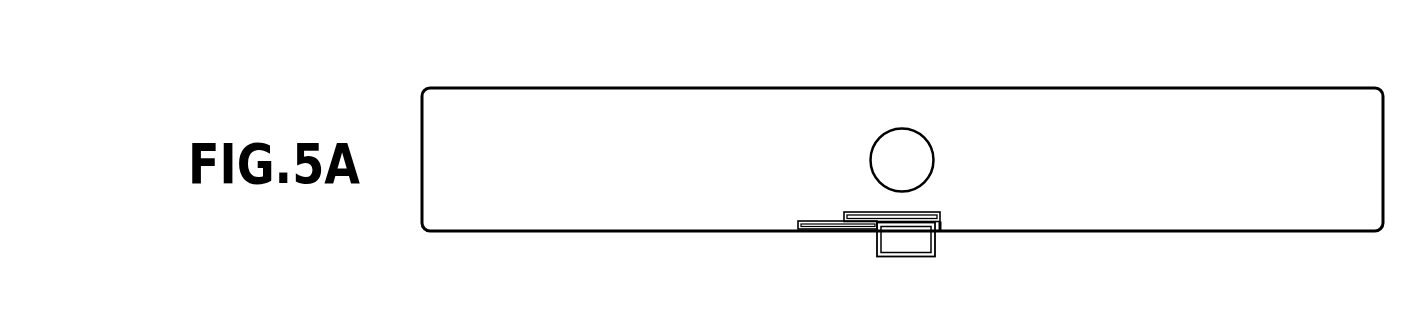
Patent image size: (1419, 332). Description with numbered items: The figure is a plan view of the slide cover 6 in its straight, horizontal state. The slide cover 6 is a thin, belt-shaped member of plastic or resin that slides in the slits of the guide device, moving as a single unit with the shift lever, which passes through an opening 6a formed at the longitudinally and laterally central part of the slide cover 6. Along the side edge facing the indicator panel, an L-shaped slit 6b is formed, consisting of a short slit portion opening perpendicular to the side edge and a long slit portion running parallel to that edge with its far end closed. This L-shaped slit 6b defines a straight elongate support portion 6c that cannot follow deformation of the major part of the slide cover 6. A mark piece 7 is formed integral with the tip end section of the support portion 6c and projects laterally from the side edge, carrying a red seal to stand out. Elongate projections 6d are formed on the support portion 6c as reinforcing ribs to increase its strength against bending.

The slide cover 6 is at (1105, 213).
The opening 6a is at (902, 150).
The L-shaped slit 6b is at (862, 212).
The support portion 6c is at (845, 233).
The elongate projection 6d is at (818, 219).
The mark piece 7 is at (905, 237).